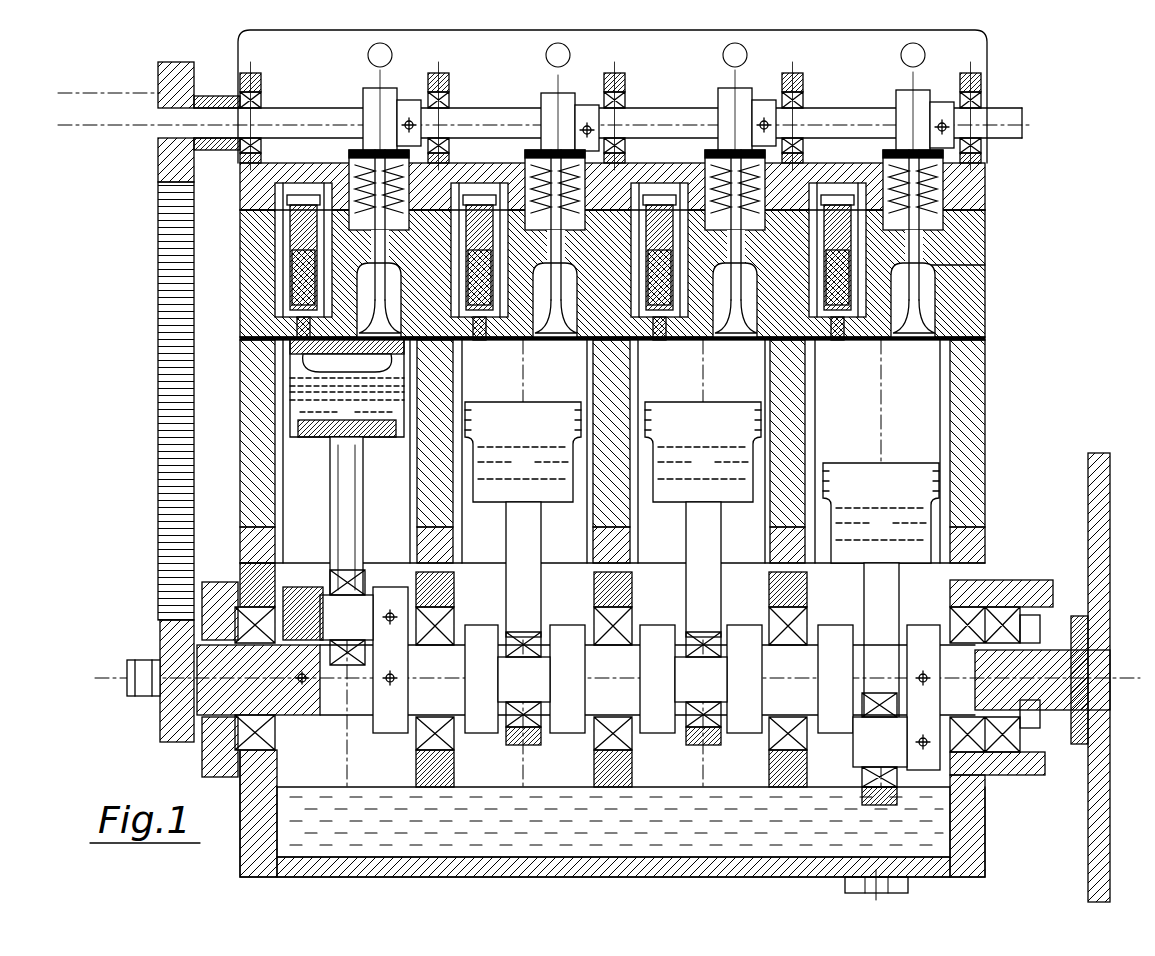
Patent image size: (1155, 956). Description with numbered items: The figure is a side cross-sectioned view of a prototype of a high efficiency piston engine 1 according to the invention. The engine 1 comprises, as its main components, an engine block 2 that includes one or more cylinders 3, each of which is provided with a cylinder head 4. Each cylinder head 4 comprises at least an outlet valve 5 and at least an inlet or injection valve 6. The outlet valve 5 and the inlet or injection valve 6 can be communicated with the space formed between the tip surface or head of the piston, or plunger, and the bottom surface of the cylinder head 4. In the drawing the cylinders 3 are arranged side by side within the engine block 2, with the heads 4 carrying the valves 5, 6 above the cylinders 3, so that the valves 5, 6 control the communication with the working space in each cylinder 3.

The high efficiency piston engine 1 is at (599, 466).
The engine block 2 is at (983, 572).
The cylinder 3 is at (985, 370).
The cylinder head 4 is at (570, 249).
The outlet valve 5 is at (342, 210).
The inlet or injection valve 6 is at (568, 249).